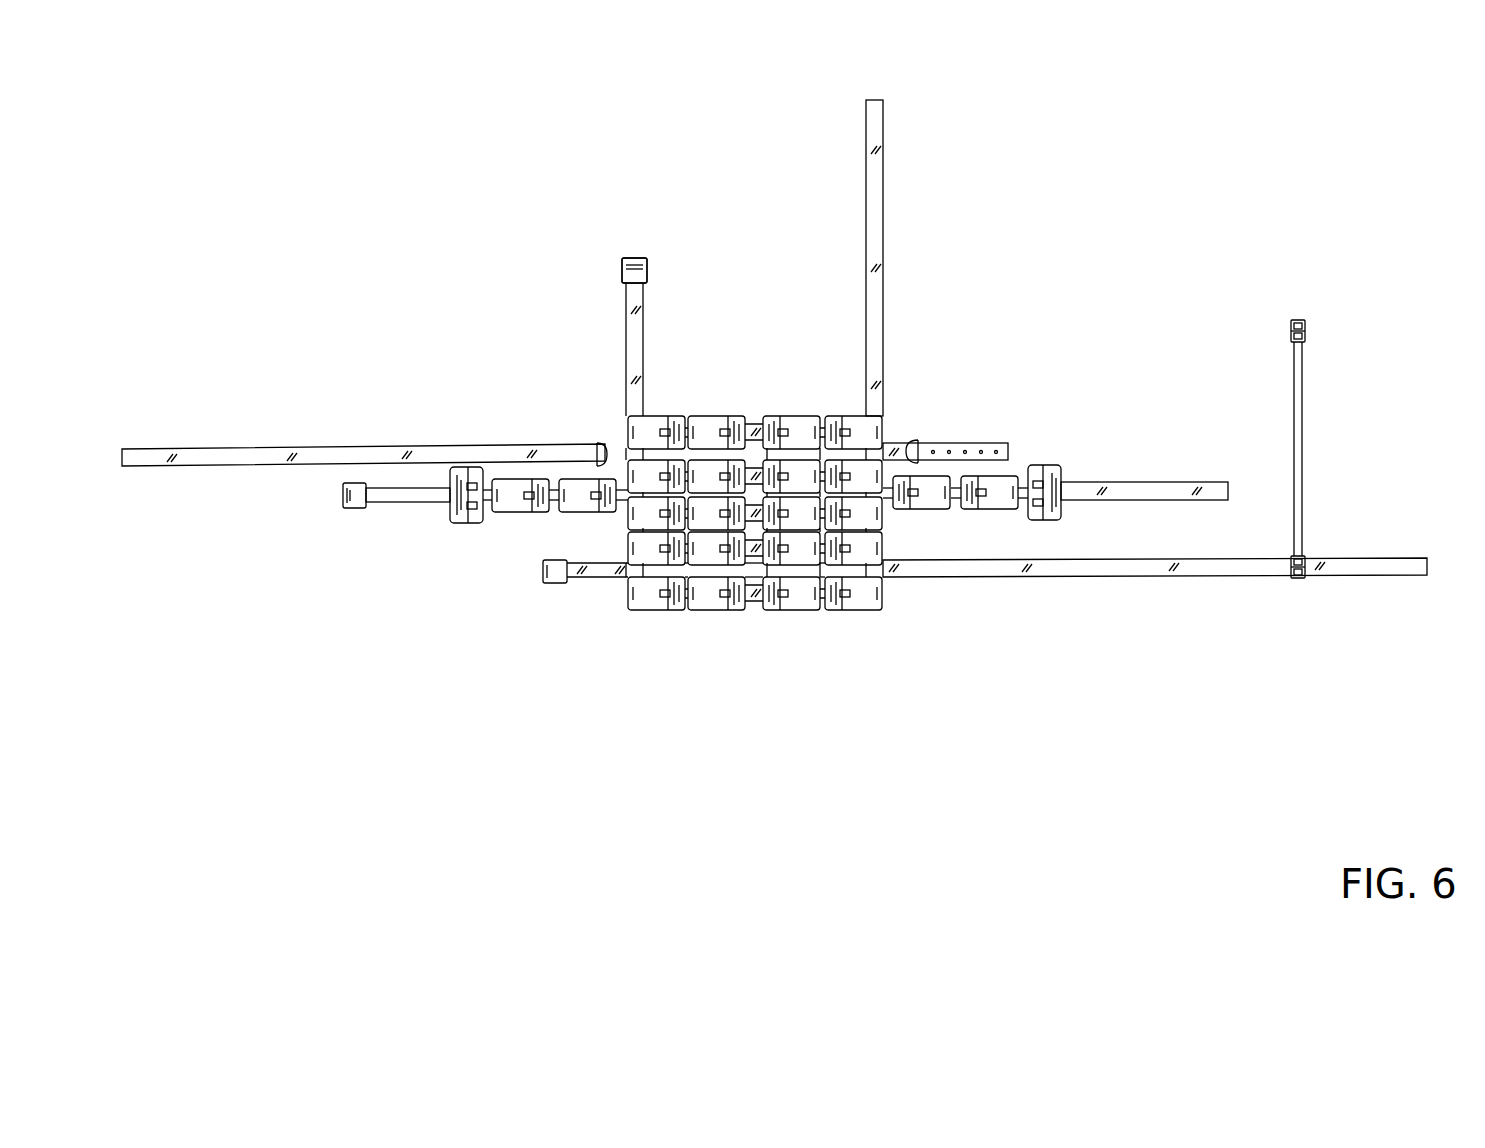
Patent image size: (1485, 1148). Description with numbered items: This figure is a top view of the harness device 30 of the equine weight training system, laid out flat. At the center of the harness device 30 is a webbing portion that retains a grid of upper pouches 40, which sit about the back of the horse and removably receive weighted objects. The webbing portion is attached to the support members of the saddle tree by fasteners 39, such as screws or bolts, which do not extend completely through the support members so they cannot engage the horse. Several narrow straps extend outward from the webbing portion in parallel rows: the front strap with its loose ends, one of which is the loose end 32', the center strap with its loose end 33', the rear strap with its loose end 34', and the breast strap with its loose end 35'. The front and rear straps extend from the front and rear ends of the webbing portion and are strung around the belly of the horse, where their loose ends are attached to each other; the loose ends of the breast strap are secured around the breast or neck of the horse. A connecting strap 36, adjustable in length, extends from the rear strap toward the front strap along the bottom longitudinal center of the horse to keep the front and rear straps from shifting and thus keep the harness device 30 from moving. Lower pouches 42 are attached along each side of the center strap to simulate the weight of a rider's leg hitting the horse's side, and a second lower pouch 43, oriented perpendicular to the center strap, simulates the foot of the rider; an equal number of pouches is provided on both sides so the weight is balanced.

The harness device 30 is at (777, 520).
The loose end of front strap 32' is at (364, 386).
The loose end of center strap 33' is at (336, 572).
The loose end of rear strap 34' is at (673, 636).
The loose end of breast strap 35' is at (554, 417).
The connecting strap 36 is at (1302, 448).
The fasteners 39 is at (622, 268).
The upper pouches 40 is at (713, 416).
The lower pouches 42 is at (583, 513).
The second lower pouch 43 is at (455, 525).